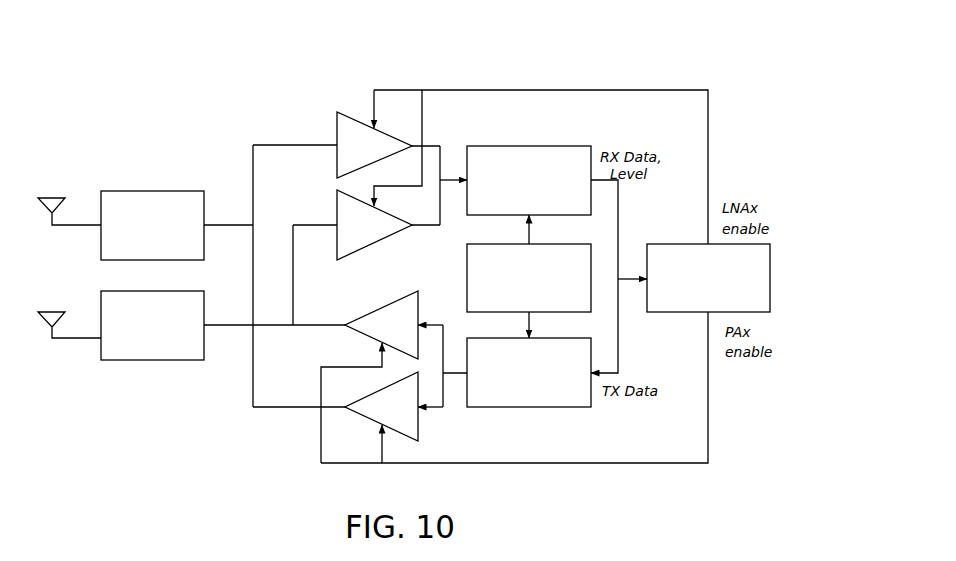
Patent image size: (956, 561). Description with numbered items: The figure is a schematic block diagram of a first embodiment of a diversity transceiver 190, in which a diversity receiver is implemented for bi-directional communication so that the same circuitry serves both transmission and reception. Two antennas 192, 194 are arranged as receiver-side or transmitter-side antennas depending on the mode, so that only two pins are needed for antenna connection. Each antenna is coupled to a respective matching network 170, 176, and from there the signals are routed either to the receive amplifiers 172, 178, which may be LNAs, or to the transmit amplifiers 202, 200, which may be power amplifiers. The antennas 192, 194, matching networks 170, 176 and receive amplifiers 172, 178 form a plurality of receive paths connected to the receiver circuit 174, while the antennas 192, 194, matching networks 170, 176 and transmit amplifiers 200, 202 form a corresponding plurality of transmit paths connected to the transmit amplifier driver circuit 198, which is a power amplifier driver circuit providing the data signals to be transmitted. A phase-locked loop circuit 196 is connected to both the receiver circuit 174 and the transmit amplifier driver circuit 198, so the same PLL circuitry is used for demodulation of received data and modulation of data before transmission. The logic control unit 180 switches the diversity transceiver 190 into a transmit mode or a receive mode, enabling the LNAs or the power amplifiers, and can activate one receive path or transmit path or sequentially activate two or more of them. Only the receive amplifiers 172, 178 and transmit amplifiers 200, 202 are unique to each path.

The diversity transceiver 190 is at (760, 51).
The antenna 192 is at (58, 201).
The antenna 194 is at (46, 312).
The matching network 170 is at (125, 205).
The matching network 176 is at (135, 305).
The receive amplifier 172 is at (346, 137).
The receive amplifier 178 is at (349, 214).
The receiver circuit 174 is at (515, 158).
The phase-locked loop circuit 196 is at (545, 256).
The transmit amplifier driver circuit 198 is at (545, 352).
The logic control unit 180 is at (761, 285).
The transmit amplifier 202 is at (407, 307).
The transmit amplifier 200 is at (409, 396).